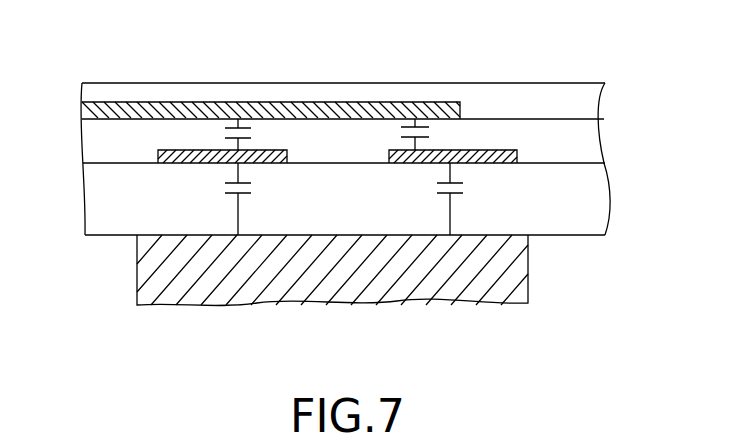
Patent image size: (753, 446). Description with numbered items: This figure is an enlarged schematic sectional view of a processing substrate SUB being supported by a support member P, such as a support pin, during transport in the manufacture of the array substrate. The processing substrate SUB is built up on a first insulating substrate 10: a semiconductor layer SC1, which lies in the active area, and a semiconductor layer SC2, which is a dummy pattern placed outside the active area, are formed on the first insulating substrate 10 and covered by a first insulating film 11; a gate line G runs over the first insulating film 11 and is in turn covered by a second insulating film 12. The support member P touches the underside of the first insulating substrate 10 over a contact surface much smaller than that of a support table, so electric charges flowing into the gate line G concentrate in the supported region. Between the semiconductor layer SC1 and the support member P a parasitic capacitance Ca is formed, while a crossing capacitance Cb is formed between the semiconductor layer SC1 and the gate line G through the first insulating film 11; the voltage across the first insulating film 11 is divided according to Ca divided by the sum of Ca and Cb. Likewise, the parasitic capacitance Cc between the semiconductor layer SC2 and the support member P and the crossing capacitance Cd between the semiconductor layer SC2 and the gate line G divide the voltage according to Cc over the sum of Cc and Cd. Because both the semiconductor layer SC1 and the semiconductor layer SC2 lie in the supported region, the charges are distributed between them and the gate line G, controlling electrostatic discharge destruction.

The processing substrate SUB is at (613, 70).
The first insulating substrate 10 is at (92, 202).
The first insulating film 11 is at (90, 136).
The second insulating film 12 is at (88, 97).
The gate line G is at (243, 102).
The semiconductor layer SC1 is at (178, 150).
The semiconductor layer (dummy pattern) SC2 is at (497, 150).
The parasitic capacitance Ca is at (254, 199).
The crossing capacitance Cb is at (254, 134).
The parasitic capacitance Cc is at (465, 199).
The crossing capacitance Cd is at (431, 134).
The support member P is at (528, 286).